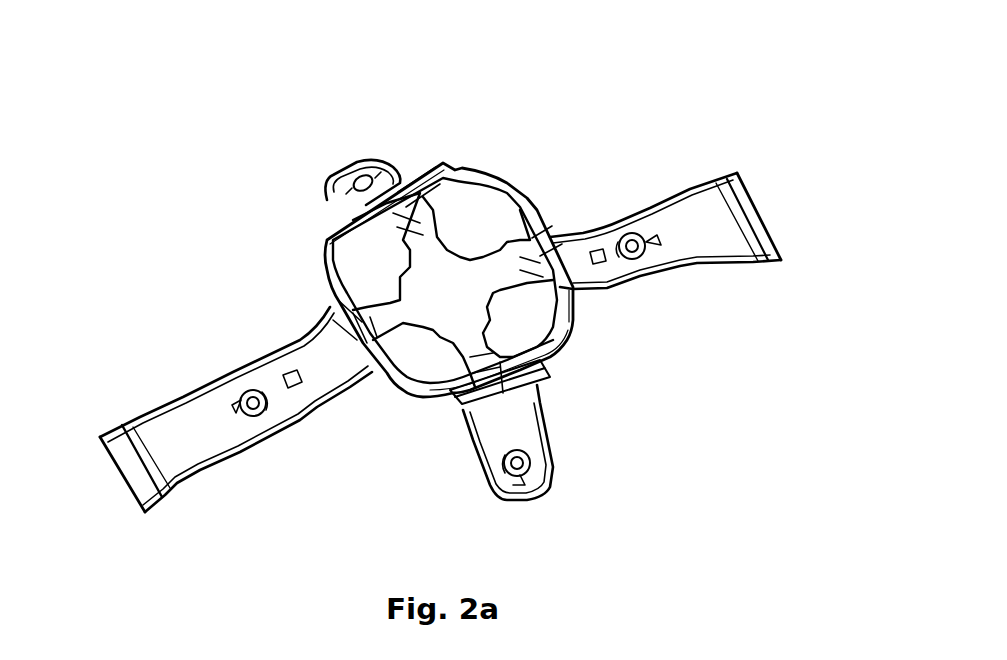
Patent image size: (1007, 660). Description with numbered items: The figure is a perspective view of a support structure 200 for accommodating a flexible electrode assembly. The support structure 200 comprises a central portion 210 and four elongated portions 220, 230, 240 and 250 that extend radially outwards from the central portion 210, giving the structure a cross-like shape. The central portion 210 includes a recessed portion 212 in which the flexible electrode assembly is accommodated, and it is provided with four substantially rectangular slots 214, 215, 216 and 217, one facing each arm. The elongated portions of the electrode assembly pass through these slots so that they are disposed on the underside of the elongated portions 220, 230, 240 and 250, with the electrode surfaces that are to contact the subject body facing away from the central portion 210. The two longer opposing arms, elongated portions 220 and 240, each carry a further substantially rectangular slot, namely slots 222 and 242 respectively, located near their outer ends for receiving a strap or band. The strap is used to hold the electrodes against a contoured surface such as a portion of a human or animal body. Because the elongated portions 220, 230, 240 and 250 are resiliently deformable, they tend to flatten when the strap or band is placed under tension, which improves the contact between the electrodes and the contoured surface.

The support structure 200 is at (714, 103).
The central portion 210 is at (483, 167).
The recessed portion 212 is at (433, 300).
The substantially rectangular slot 214 is at (417, 200).
The substantially rectangular slot 215 is at (553, 232).
The substantially rectangular slot 216 is at (547, 365).
The substantially rectangular slot 217 is at (353, 317).
The elongated portion 220 is at (727, 267).
The substantially rectangular slot 222 is at (767, 207).
The elongated portion 230 is at (543, 418).
The elongated portion 240 is at (233, 453).
The substantially rectangular slot 242 is at (127, 467).
The elongated portion 250 is at (337, 170).